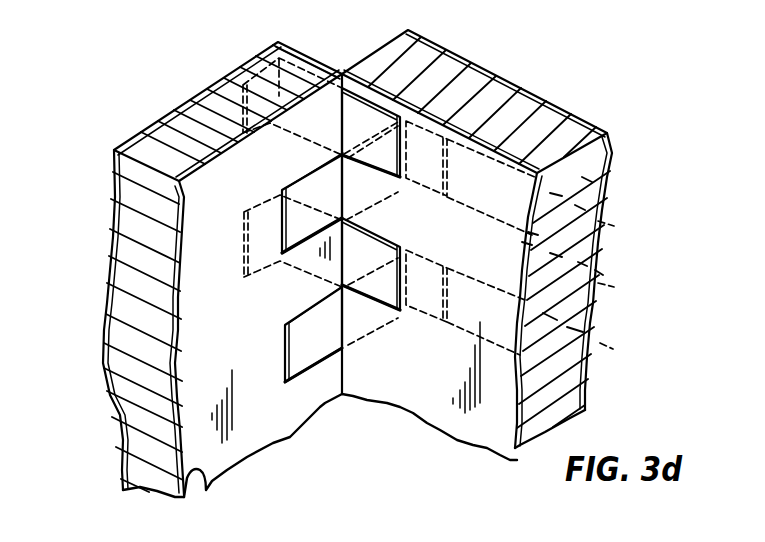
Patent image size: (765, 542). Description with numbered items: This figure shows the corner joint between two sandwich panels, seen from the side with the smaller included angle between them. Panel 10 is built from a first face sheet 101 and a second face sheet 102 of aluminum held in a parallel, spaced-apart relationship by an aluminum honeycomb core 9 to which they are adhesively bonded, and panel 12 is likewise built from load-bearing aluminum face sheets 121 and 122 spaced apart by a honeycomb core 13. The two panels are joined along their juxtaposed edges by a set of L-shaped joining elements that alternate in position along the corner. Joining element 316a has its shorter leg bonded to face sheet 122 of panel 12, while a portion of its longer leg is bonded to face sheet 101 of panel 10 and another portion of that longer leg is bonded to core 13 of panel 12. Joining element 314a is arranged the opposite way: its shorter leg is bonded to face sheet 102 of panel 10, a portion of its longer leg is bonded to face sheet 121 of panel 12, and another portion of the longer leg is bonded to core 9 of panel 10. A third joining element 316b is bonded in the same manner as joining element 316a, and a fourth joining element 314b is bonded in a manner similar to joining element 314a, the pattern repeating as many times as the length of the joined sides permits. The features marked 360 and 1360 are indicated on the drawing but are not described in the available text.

The honeycomb core 9 is at (553, 120).
The sandwich panel 10 is at (600, 182).
The face sheet 101 is at (513, 420).
The face sheet 102 is at (590, 398).
The sandwich panel 12 is at (222, 464).
The face sheet 121 is at (200, 497).
The face sheet 122 is at (120, 452).
The honeycomb core 13 is at (140, 465).
The joining element 314a is at (277, 225).
The joining element 314b is at (319, 348).
The joining element 316a is at (365, 116).
The joining element 316b is at (378, 248).
The slot 360 is at (615, 225).
The slot 1360 is at (615, 288).